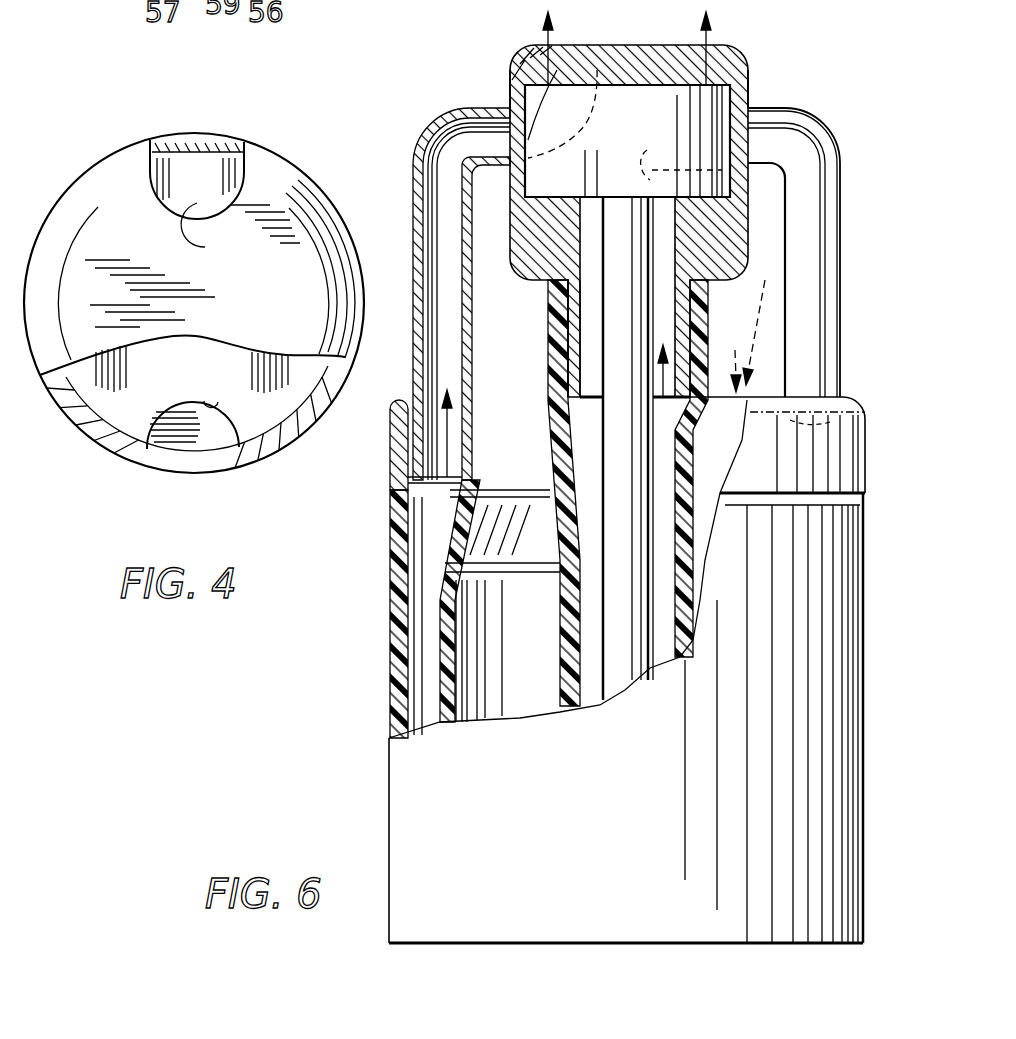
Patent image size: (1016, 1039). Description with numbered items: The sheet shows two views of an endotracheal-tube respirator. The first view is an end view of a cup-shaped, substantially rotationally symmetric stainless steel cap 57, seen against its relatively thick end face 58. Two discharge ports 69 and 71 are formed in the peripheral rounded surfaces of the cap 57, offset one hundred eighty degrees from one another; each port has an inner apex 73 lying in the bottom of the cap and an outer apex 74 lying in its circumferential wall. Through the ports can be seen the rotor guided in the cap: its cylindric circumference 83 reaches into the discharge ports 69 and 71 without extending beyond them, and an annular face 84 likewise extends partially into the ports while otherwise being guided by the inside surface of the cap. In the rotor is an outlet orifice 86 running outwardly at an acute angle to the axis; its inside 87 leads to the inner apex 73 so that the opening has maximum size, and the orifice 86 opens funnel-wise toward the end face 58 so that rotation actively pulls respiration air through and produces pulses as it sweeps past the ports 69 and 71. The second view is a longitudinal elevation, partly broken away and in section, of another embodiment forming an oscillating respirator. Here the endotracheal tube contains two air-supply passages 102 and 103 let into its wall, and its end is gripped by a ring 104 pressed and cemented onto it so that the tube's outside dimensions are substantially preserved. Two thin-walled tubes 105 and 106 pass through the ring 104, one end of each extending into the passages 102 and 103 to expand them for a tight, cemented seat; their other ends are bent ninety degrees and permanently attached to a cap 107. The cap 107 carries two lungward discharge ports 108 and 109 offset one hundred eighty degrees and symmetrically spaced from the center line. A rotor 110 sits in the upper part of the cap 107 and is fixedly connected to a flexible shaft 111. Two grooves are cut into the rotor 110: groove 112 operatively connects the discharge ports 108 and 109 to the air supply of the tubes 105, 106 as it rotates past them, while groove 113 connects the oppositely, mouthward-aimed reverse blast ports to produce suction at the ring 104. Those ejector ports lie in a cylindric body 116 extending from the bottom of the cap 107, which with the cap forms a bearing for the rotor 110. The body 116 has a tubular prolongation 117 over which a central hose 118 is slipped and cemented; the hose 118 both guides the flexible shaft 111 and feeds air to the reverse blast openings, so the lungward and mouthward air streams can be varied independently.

In FIG. 4, the cap 57 is at (330, 236).
In FIG. 4, the end face 58 is at (290, 334).
In FIG. 4, the discharge port 69 is at (230, 162).
In FIG. 4, the discharge port 71 is at (210, 452).
In FIG. 4, the inner apex 73 is at (210, 235).
In FIG. 4, the outer apex 74 is at (170, 116).
In FIG. 4, the cylindric circumference 83 is at (213, 158).
In FIG. 4, the annular face 84 is at (215, 194).
In FIG. 4, the outlet orifice 86 is at (185, 402).
In FIG. 4, the inside of the orifice 87 is at (210, 405).
In FIG. 6, the air-supply passage 102 is at (410, 541).
In FIG. 6, the air-supply passage 103 is at (818, 386).
In FIG. 6, the ring 104 is at (396, 458).
In FIG. 6, the tube 105 is at (420, 340).
In FIG. 6, the tube 106 is at (826, 297).
In FIG. 6, the cap 107 is at (514, 74).
In FIG. 6, the discharge port 108 is at (528, 62).
In FIG. 6, the discharge port 109 is at (722, 60).
In FIG. 6, the rotor 110 is at (736, 98).
In FIG. 6, the flexible shaft 111 is at (627, 618).
In FIG. 6, the groove 112 is at (566, 48).
In FIG. 6, the groove 113 is at (702, 263).
In FIG. 6, the cylindric body 116 is at (718, 260).
In FIG. 6, the tubular prolongation 117 is at (572, 318).
In FIG. 6, the hose 118 is at (558, 362).